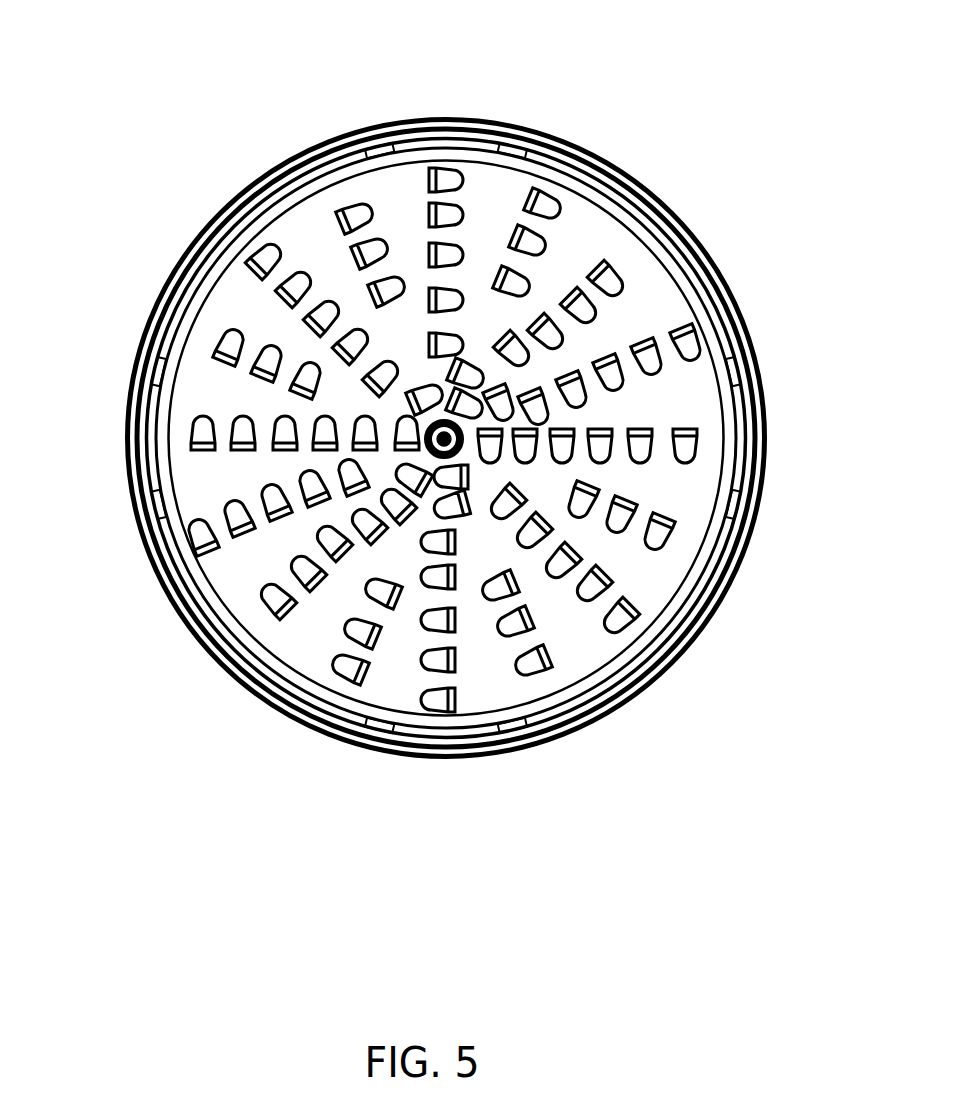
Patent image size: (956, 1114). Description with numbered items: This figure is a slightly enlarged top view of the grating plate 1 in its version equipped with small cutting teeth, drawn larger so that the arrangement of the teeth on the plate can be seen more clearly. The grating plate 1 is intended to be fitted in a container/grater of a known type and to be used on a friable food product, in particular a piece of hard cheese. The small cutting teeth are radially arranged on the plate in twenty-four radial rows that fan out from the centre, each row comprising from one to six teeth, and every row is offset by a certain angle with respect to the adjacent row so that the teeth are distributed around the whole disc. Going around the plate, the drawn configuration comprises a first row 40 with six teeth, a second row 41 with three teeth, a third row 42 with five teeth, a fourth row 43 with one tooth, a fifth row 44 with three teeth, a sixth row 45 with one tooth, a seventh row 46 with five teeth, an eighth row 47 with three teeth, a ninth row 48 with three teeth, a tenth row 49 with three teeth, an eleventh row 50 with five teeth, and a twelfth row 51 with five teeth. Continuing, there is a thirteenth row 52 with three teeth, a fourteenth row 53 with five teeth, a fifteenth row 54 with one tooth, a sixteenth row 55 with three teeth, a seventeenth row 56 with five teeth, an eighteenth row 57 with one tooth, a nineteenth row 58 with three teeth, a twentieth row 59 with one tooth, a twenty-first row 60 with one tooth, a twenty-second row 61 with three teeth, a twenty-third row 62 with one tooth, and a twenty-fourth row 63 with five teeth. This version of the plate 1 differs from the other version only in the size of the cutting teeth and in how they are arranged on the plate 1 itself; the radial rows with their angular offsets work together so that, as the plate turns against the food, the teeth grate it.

The grating plate 1 is at (232, 273).
The first row 40 is at (643, 422).
The second row 41 is at (625, 503).
The third row 42 is at (577, 560).
The fourth row 43 is at (520, 632).
The fifth row 44 is at (540, 672).
The sixth row 45 is at (452, 490).
The seventh row 46 is at (440, 612).
The eighth row 47 is at (355, 628).
The ninth row 48 is at (300, 592).
The tenth row 49 is at (280, 575).
The eleventh row 50 is at (262, 492).
The twelfth row 51 is at (300, 425).
The thirteenth row 52 is at (258, 342).
The fourteenth row 53 is at (323, 300).
The fifteenth row 54 is at (415, 388).
The sixteenth row 55 is at (425, 390).
The seventeenth row 56 is at (443, 345).
The eighteenth row 57 is at (467, 372).
The nineteenth row 58 is at (548, 200).
The twentieth row 59 is at (510, 337).
The twenty-first row 60 is at (500, 352).
The twenty-second row 61 is at (480, 372).
The twenty-third row 62 is at (515, 397).
The twenty-fourth row 63 is at (655, 365).